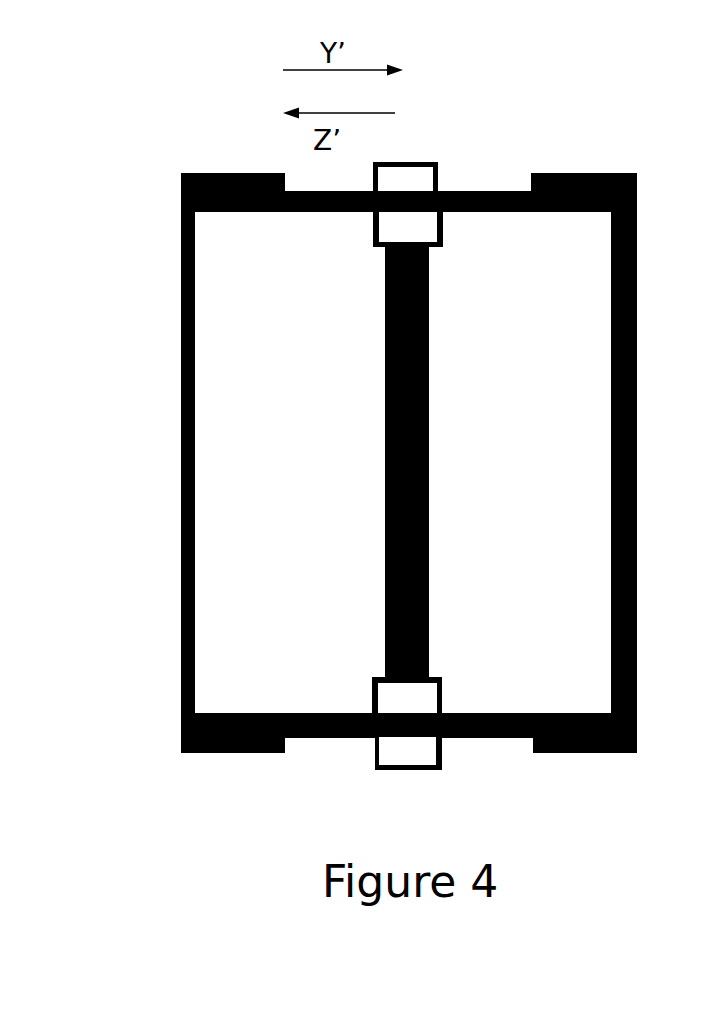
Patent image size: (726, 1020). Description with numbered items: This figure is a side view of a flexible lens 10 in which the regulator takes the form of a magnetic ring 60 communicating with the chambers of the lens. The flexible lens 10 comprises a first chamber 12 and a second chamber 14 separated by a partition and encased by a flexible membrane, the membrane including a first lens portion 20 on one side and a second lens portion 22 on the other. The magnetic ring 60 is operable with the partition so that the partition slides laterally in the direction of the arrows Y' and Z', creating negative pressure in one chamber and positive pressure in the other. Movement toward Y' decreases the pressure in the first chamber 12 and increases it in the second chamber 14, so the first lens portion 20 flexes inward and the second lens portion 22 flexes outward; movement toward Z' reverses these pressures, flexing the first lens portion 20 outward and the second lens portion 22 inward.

The flexible lens 10 is at (120, 302).
The first chamber 12 is at (309, 461).
The second chamber 14 is at (545, 461).
The first lens portion 20 is at (183, 648).
The second lens portion 22 is at (637, 630).
The magnetic ring 60 is at (469, 157).